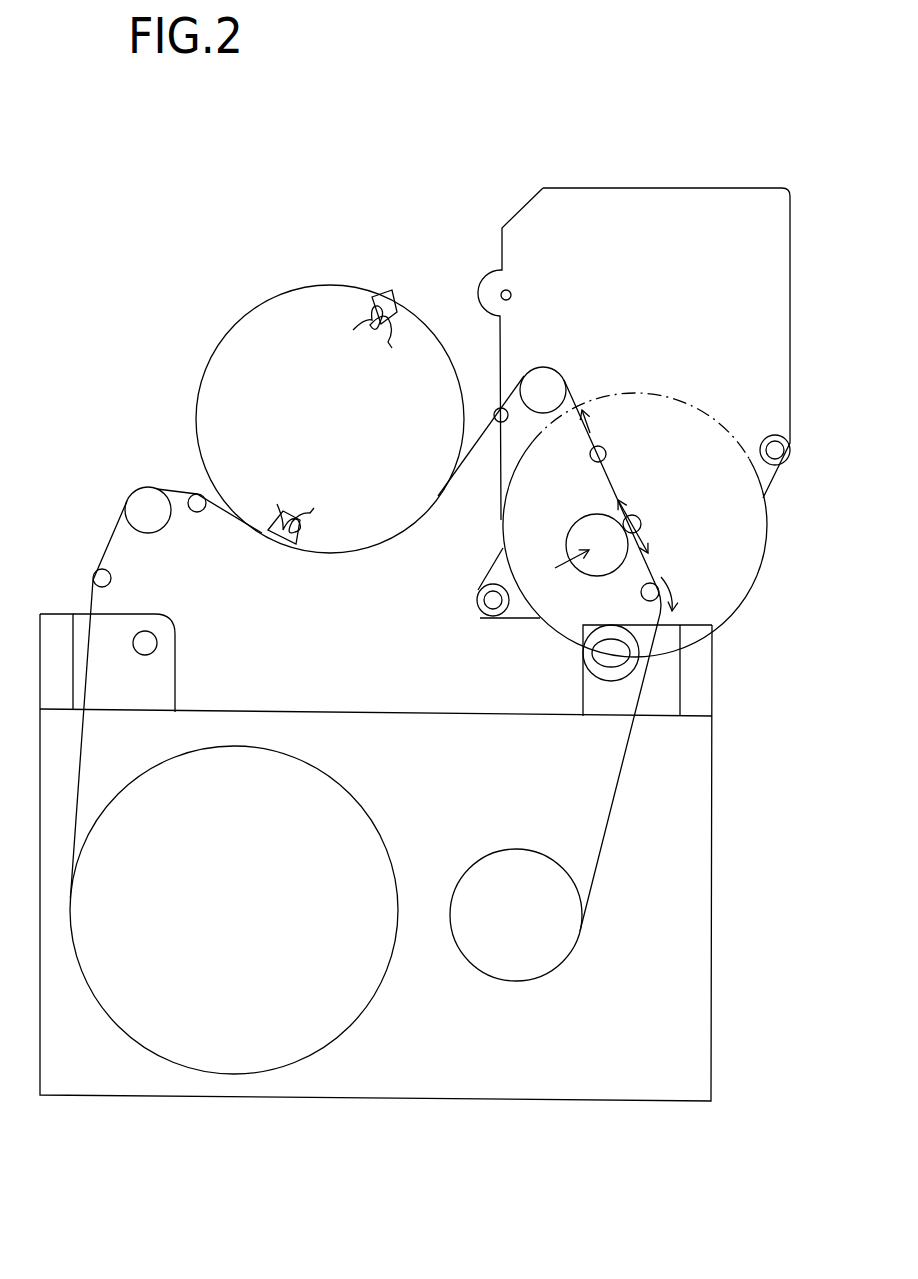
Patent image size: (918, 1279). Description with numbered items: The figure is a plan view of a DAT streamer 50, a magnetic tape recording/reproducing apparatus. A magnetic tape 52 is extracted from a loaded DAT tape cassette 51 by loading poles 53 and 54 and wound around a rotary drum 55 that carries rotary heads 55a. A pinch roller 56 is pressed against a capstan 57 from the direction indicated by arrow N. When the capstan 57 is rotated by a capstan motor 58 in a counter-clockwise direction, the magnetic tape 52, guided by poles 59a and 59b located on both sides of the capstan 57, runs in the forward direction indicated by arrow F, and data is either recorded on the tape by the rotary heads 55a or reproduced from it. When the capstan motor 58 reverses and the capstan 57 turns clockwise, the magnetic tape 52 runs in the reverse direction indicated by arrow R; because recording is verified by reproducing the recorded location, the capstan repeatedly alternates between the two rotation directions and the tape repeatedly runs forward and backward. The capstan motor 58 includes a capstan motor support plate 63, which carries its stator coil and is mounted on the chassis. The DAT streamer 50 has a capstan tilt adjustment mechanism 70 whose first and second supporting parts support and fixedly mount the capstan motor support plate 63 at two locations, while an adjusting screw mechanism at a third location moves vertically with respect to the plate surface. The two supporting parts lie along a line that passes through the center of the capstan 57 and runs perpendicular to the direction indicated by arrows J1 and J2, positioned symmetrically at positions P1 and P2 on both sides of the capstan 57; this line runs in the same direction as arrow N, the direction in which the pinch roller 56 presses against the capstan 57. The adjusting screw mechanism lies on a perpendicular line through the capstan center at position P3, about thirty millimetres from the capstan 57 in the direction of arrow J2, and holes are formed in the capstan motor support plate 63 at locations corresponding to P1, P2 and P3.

The DAT streamer 50 is at (487, 145).
The DAT tape cassette 51 is at (700, 937).
The magnetic tape 52 is at (557, 394).
The loading pole 53 is at (157, 520).
The loading pole 54 is at (538, 388).
The rotary drum 55 is at (227, 352).
The rotary heads 55a is at (397, 332).
The pinch roller 56 is at (578, 527).
The capstan 57 is at (639, 519).
The capstan motor 58 is at (688, 409).
The pole 59a is at (604, 450).
The pole 59b is at (641, 594).
The capstan motor support plate 63 is at (780, 289).
The capstan tilt adjustment mechanism 70 is at (781, 525).
The position P1 is at (483, 607).
The position P2 is at (791, 443).
The position P3 is at (500, 290).
The arrow R is at (600, 416).
The arrow N is at (570, 579).
The arrow F is at (679, 599).
The arrow J1 is at (660, 557).
The arrow J2 is at (633, 509).